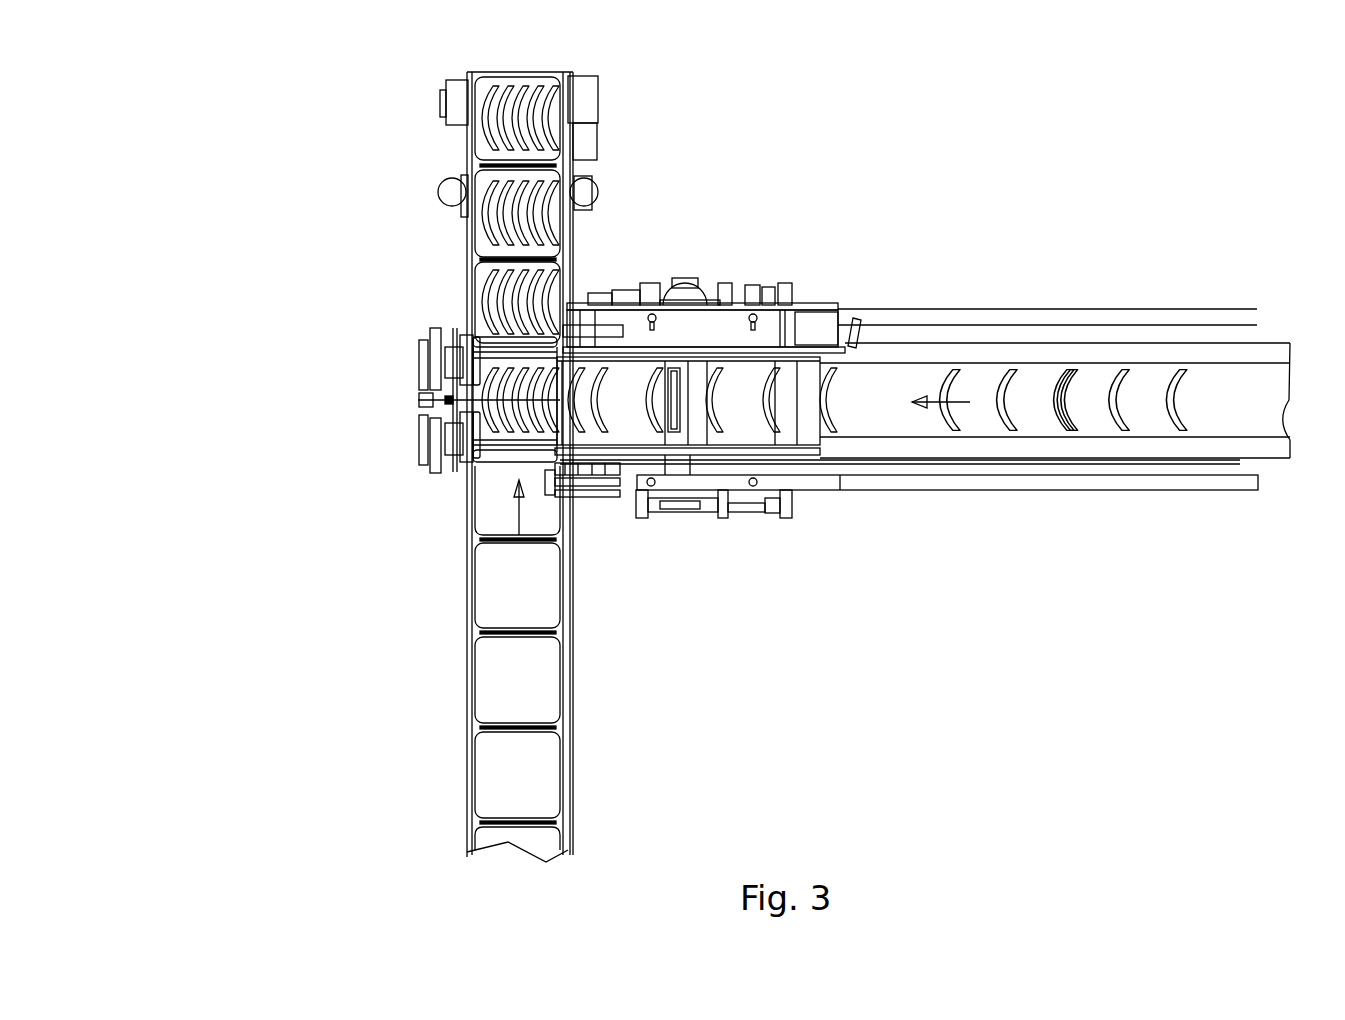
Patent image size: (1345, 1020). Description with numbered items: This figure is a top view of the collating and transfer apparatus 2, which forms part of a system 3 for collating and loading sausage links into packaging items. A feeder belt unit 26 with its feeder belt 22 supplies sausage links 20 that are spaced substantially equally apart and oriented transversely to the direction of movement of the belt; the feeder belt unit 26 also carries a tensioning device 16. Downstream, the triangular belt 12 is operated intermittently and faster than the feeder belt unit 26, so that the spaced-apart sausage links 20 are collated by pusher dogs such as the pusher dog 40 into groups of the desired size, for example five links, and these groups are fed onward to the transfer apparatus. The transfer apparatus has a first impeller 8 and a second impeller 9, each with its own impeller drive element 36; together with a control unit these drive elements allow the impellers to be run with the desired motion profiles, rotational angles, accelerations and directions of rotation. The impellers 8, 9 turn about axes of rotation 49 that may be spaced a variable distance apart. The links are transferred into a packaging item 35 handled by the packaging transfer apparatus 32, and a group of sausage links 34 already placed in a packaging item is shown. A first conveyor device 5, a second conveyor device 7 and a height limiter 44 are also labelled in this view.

The collating and transfer apparatus 2 is at (1022, 165).
The system for collating and loading sausage links into packaging items 3 is at (193, 78).
The first conveyor device 5 is at (405, 433).
The second conveyor device 7 is at (412, 377).
The first impeller 8 is at (490, 460).
The second impeller 9 is at (518, 345).
The triangular belt 12 is at (753, 262).
The tensioning device 16 is at (786, 510).
The sausage link 20 is at (1175, 385).
The feeder belt 22 is at (1235, 385).
The feeder belt unit 26 is at (1276, 487).
The packaging transfer apparatus 32 is at (440, 682).
The group of sausage links placed in packaging item 34 is at (515, 130).
The packaging item 35 is at (530, 590).
The impeller drive element 36 is at (410, 362).
The pusher dog 40 is at (677, 380).
The height limiter 44 is at (415, 402).
The axes of rotation 49 is at (415, 365).